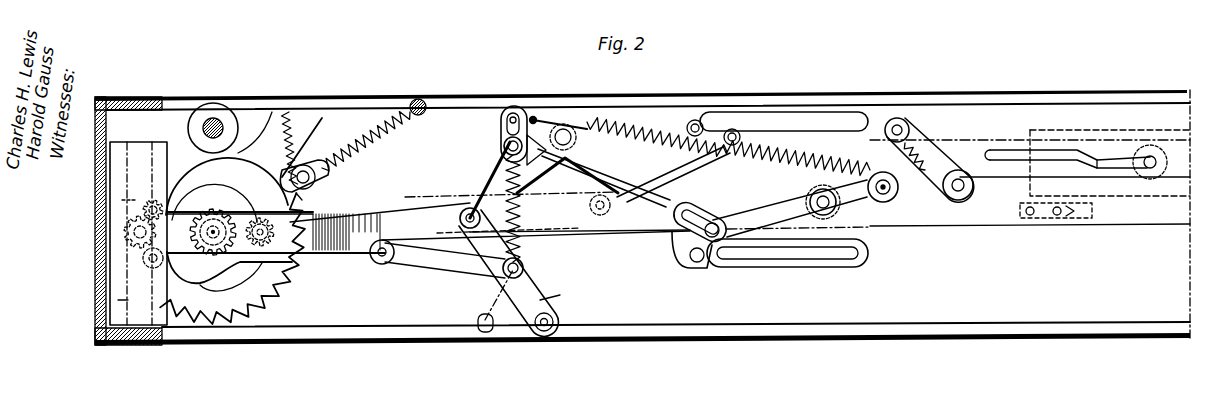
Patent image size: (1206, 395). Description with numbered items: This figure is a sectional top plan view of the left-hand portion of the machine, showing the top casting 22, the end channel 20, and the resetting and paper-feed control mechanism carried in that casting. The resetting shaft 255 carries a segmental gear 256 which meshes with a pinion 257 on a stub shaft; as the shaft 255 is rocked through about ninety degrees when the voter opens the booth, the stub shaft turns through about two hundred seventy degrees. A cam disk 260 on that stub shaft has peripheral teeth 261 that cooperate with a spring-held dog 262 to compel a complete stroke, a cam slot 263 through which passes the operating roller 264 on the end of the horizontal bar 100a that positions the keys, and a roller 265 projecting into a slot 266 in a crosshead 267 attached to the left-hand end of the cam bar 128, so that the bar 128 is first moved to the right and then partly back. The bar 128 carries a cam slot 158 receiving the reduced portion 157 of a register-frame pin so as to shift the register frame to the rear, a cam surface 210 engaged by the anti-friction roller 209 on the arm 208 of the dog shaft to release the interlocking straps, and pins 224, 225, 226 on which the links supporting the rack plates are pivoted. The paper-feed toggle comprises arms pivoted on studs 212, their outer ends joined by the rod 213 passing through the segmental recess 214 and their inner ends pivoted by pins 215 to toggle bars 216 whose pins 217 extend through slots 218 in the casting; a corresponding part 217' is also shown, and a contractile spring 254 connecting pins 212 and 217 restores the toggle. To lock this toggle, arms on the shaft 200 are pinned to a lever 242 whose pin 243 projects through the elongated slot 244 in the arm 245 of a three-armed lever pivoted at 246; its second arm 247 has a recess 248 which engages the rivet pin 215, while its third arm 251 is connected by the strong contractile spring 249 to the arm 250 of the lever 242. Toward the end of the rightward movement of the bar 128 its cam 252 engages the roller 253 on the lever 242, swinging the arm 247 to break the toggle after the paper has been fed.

The channel 20 is at (95, 218).
The channel-shaped casting 22 is at (642, 217).
The horizontal bar 100a is at (392, 208).
The cam bar 128 is at (978, 150).
The reduced upper portion of pin 157 is at (1150, 155).
The cam slot 158 is at (1092, 155).
The shaft 200 is at (907, 198).
The arm 208 is at (940, 152).
The anti-friction roller 209 is at (905, 122).
The cam surface 210 is at (858, 118).
The stud 212 is at (508, 276).
The rod 213 is at (545, 333).
The segmental recess 214 is at (484, 334).
The pin 215 is at (465, 210).
The toggle bar 216 is at (505, 148).
The pin 217 is at (493, 135).
The link 217' is at (582, 295).
The slot 218 is at (520, 108).
The pin 224 is at (380, 266).
The pin 225 is at (697, 118).
The pin 226 is at (697, 264).
The lever 242 is at (887, 222).
The pin 243 is at (712, 240).
The elongated slot 244 is at (673, 247).
The arm of three-armed lever 245 is at (607, 168).
The pivot 246 is at (592, 117).
The locking lever arm 247 is at (574, 169).
The recess 248 is at (467, 262).
The helically coiled contractile spring 249 is at (775, 125).
The arm of lever 250 is at (940, 200).
The third arm of three-armed lever 251 is at (585, 124).
The cam 252 is at (673, 167).
The roller 253 is at (818, 215).
The helically coiled contractile spring 254 is at (578, 231).
The resetting shaft 255 is at (222, 120).
The segmental gear 256 is at (282, 133).
The pinion 257 is at (215, 270).
The cam disk 260 is at (328, 150).
The teeth 261 is at (283, 290).
The spring-held dog 262 is at (320, 176).
The cam slot 263 is at (222, 283).
The operating roller 264 is at (318, 258).
The roller 265 is at (125, 237).
The slot 266 is at (120, 165).
The crosshead 267 is at (124, 300).